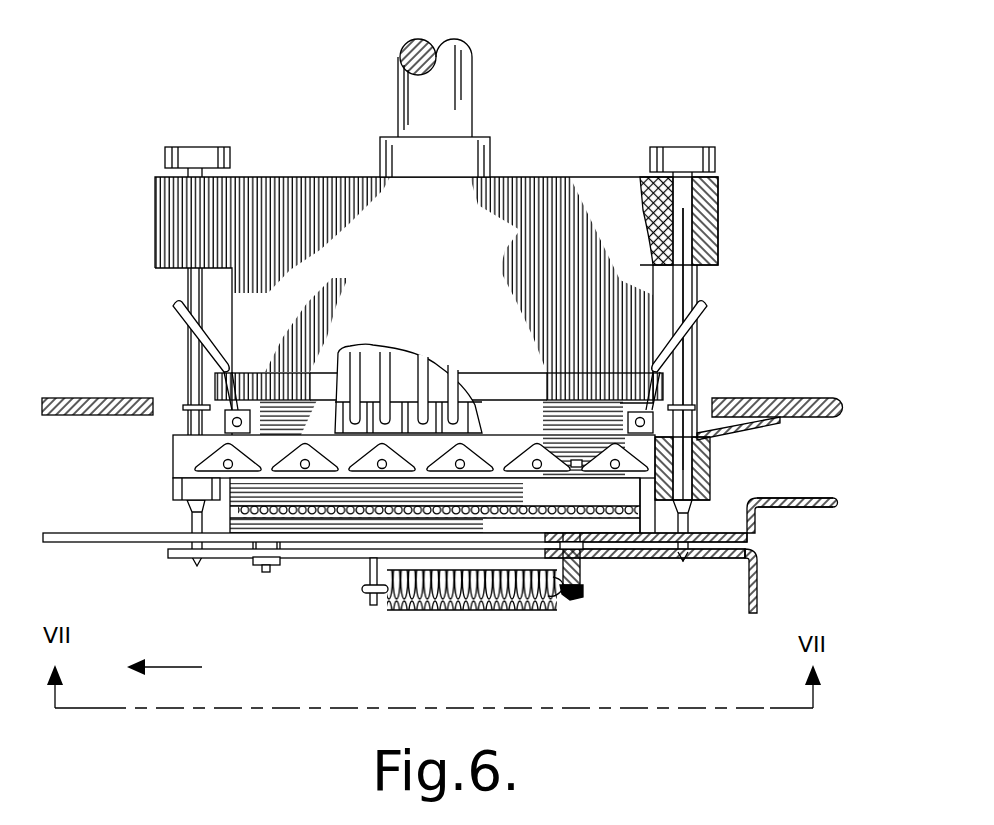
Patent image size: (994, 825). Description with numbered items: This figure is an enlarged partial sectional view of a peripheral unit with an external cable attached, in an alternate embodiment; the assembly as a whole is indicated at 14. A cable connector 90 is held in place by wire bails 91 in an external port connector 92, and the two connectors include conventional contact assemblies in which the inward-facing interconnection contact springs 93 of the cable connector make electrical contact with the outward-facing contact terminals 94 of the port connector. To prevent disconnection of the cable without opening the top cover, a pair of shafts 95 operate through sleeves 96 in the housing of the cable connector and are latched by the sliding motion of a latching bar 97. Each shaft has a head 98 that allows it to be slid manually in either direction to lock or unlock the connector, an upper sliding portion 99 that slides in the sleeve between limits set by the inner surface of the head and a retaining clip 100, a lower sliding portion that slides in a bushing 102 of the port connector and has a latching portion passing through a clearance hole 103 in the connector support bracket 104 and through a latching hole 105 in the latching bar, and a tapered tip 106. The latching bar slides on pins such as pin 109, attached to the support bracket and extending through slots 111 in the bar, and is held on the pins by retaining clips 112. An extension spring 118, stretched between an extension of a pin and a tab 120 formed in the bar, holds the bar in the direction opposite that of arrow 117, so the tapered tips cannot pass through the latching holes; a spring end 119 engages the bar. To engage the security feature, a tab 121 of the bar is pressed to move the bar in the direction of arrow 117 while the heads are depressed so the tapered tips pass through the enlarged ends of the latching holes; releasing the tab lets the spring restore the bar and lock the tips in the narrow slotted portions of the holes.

The clamping head assembly 14 is at (329, 168).
The cable connector 90 is at (523, 177).
The wire bails 91 is at (188, 324).
The external port connector 92 is at (136, 483).
The interconnection contact springs 93 is at (412, 370).
The contact terminals 94 is at (432, 392).
The shafts 95 is at (187, 367).
The sleeves 96 is at (700, 195).
The latching bar 97 is at (345, 560).
The head 98 is at (177, 147).
The upper sliding portion 99 is at (683, 233).
The retaining clip 100 is at (185, 405).
The bushing 102 is at (710, 490).
The clearance hole 103 is at (717, 508).
The connector support bracket 104 is at (773, 507).
The latching hole 105 is at (690, 558).
The tapered tip 106 is at (682, 562).
The pin 109 is at (270, 572).
The slots 111 is at (587, 558).
The retaining clips 112 is at (583, 560).
The arrow 117 is at (180, 667).
The extension spring 118 is at (463, 610).
The screw head 119 is at (578, 600).
The tab 120 is at (372, 605).
The tab 121 is at (757, 578).